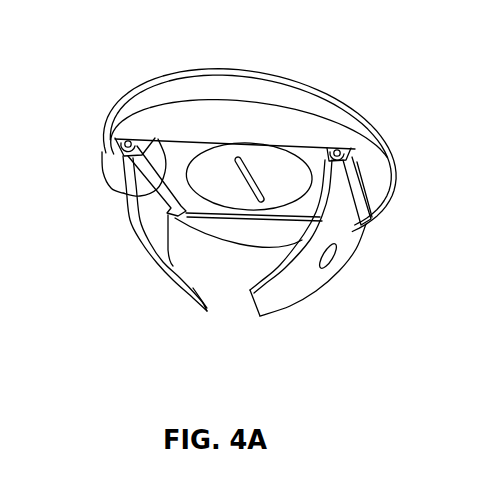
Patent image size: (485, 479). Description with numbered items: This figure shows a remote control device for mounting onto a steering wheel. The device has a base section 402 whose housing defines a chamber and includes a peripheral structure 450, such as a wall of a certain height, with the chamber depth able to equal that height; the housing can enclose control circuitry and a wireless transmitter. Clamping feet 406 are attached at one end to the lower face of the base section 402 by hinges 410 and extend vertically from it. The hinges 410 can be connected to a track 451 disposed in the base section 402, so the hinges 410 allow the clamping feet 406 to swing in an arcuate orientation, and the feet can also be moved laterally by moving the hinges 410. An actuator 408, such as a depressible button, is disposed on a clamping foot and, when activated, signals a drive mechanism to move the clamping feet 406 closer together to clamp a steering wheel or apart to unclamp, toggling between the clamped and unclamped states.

The base section 402 is at (293, 130).
The clamping feet 406 is at (183, 300).
The actuator 408 is at (320, 270).
The hinges 410 is at (156, 140).
The peripheral structure 450 is at (247, 84).
The track 451 is at (118, 194).